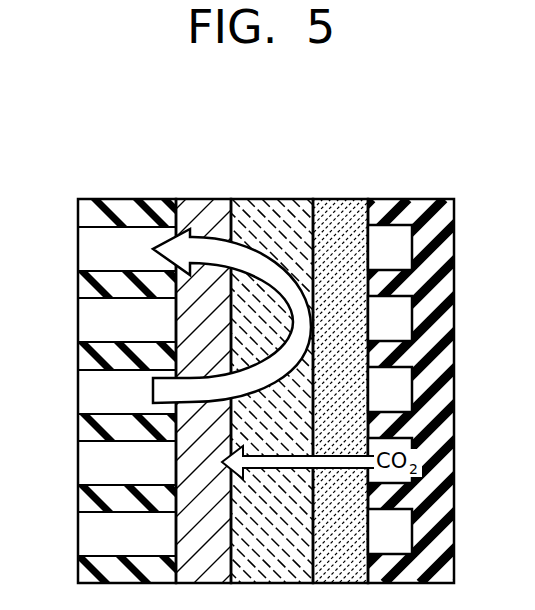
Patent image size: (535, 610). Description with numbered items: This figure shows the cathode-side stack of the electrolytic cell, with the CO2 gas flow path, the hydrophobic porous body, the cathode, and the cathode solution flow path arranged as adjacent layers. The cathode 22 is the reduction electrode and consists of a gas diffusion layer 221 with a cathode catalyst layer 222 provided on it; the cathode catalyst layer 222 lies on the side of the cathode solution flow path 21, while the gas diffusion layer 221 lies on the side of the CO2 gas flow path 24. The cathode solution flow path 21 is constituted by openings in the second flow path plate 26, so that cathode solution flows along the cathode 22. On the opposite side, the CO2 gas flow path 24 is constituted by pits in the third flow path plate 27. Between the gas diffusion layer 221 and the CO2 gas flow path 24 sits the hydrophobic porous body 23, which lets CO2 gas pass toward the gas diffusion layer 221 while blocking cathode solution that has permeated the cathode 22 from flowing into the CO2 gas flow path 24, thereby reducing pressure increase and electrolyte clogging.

The cathode solution flow path 21 is at (134, 242).
The second flow path plate 26 is at (78, 283).
The cathode 22 is at (267, 342).
The cathode catalyst layer 222 is at (207, 203).
The gas diffusion layer 221 is at (185, 140).
The hydrophobic porous body 23 is at (344, 203).
The CO2 gas flow path 24 is at (390, 243).
The third flow path plate 27 is at (445, 258).